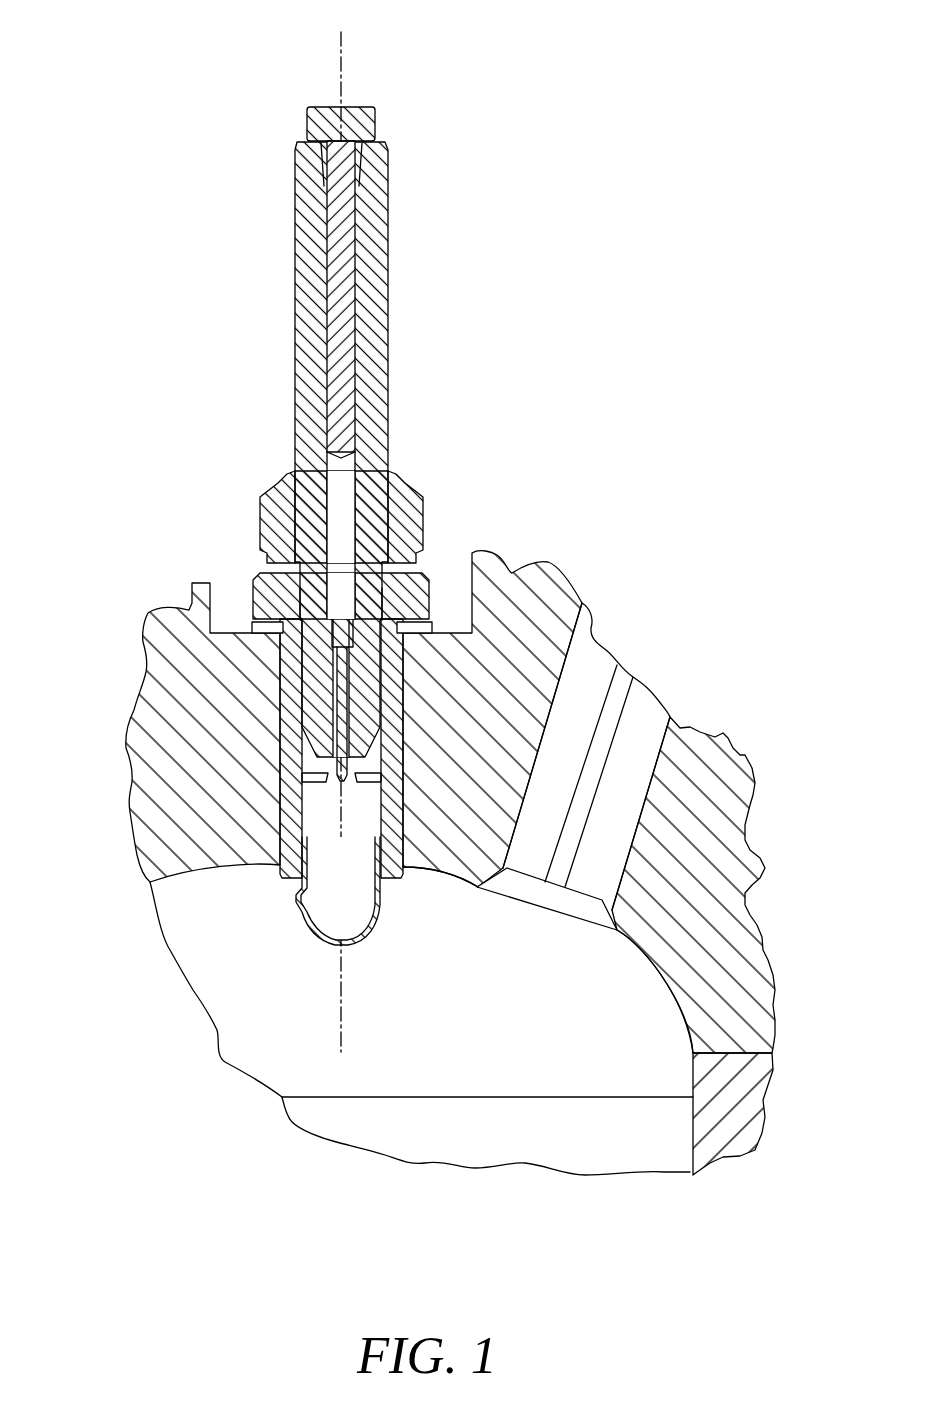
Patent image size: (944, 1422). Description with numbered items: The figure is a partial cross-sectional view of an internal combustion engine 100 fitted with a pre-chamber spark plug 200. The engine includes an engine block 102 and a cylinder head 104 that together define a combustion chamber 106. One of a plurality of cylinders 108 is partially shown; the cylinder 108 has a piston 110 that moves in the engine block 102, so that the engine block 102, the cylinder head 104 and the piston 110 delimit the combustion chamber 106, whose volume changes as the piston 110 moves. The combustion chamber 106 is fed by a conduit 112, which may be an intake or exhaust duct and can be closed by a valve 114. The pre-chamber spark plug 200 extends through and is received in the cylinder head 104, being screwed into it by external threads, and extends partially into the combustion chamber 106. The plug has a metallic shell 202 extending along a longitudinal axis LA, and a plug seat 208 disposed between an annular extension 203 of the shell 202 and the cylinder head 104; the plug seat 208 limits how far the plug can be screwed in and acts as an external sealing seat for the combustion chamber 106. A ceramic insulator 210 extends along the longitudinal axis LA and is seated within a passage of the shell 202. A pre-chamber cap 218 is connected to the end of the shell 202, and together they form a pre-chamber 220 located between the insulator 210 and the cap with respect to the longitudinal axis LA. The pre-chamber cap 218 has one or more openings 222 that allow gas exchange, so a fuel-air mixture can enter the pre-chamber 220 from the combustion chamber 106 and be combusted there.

The internal combustion engine 100 is at (172, 50).
The engine block 102 is at (730, 1100).
The cylinder head 104 is at (197, 767).
The combustion chamber 106 is at (262, 1058).
The cylinder 108 is at (248, 1129).
The piston 110 is at (412, 1143).
The conduit 112 is at (648, 713).
The valve 114 is at (617, 687).
The pre-chamber spark plug 200 is at (435, 75).
The shell 202 is at (413, 498).
The annular extension 203 is at (413, 595).
The plug seat 208 is at (263, 634).
The insulator 210 is at (300, 348).
The pre-chamber cap 218 is at (337, 947).
The pre-chamber 220 is at (312, 893).
The openings 222 is at (294, 932).
The longitudinal axis LA is at (343, 40).